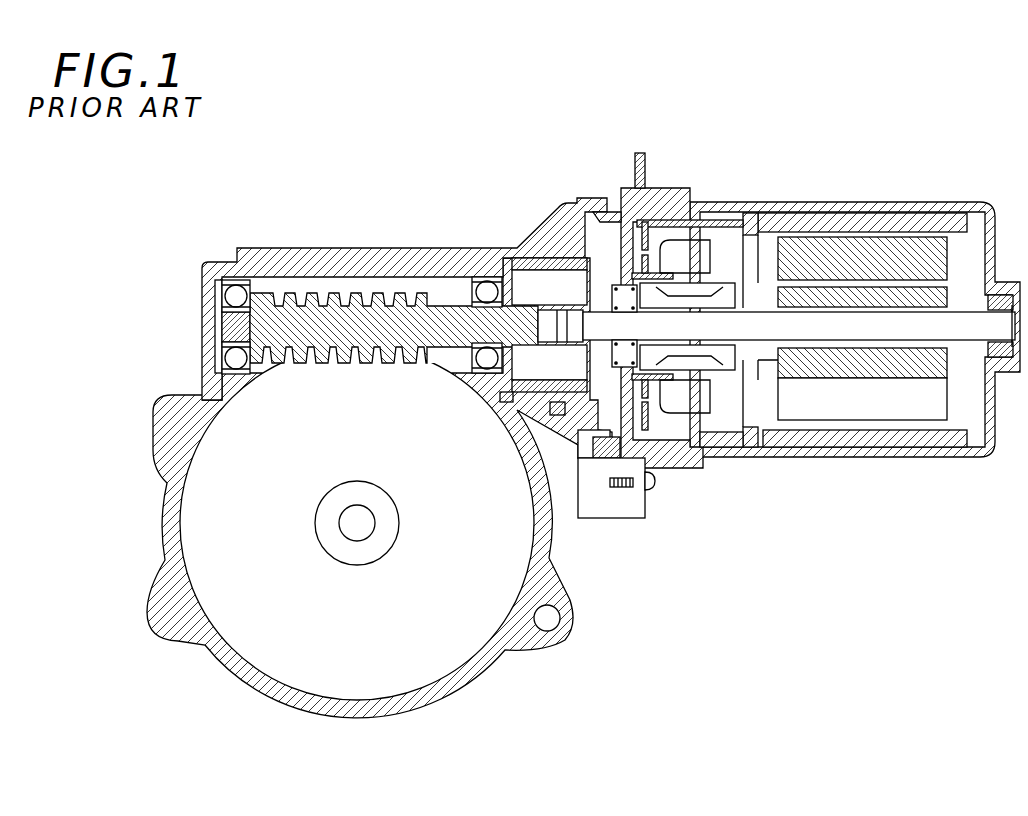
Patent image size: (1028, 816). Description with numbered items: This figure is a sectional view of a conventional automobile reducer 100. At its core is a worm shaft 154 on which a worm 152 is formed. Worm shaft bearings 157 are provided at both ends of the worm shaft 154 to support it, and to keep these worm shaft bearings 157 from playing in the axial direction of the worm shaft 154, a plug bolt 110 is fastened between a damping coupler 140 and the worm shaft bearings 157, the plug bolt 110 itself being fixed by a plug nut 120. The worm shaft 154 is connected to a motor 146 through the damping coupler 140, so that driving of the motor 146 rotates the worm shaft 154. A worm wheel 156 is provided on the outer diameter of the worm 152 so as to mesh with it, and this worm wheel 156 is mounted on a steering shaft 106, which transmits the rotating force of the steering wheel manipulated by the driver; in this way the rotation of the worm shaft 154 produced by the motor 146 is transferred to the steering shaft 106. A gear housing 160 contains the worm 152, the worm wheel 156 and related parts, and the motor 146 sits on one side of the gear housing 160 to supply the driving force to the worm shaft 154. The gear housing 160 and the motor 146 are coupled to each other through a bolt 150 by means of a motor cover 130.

The automobile reducer 100 is at (694, 86).
The steering shaft 106 is at (357, 530).
The plug bolt 110 is at (556, 258).
The plug nut 120 is at (499, 255).
The motor cover 130 is at (667, 185).
The damping coupler 140 is at (572, 378).
The motor 146 is at (807, 201).
The bolt 150 is at (656, 486).
The worm 152 is at (299, 292).
The worm shaft 154 is at (222, 335).
The worm wheel 156 is at (440, 660).
The worm shaft bearings 157 is at (232, 286).
The gear housing 160 is at (353, 256).